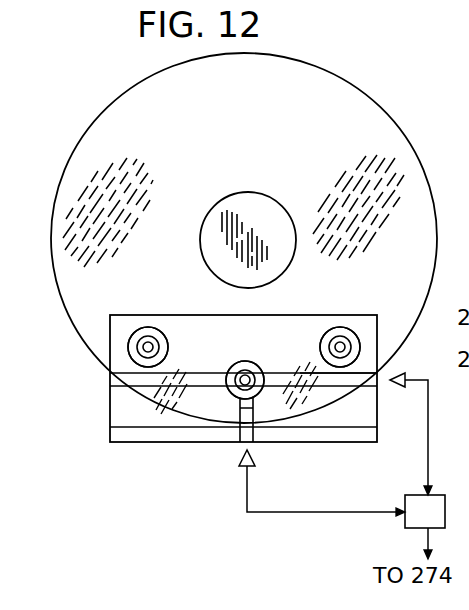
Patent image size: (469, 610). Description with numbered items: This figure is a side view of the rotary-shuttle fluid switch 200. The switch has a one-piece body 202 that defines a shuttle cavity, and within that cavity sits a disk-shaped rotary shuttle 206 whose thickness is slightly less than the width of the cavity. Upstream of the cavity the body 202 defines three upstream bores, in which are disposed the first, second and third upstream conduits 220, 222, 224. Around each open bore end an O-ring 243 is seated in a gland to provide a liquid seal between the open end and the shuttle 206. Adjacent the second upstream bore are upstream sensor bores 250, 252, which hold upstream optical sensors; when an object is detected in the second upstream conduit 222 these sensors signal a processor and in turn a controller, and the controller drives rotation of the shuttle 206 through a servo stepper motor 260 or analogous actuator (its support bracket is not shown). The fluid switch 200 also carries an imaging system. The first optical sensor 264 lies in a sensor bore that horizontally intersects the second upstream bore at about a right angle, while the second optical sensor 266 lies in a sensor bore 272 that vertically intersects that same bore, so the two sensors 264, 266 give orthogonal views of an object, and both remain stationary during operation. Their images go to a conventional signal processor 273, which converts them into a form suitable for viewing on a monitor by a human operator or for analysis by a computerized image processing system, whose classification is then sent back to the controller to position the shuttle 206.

The fluid switch 200 is at (197, 386).
The body 202 is at (118, 410).
The rotary shuttle 206 is at (380, 101).
The first upstream conduit 220 is at (132, 342).
The second upstream conduit 222 is at (232, 372).
The third upstream conduit 224 is at (333, 338).
The O-ring 243 is at (151, 327).
The upstream sensor bore 250 is at (114, 380).
The upstream sensor bore 252 is at (337, 378).
The servo stepper motor 260 is at (217, 202).
The first optical sensor 264 is at (392, 386).
The second optical sensor 266 is at (240, 462).
The sensor bore 272 is at (253, 408).
The signal processor 273 is at (405, 530).